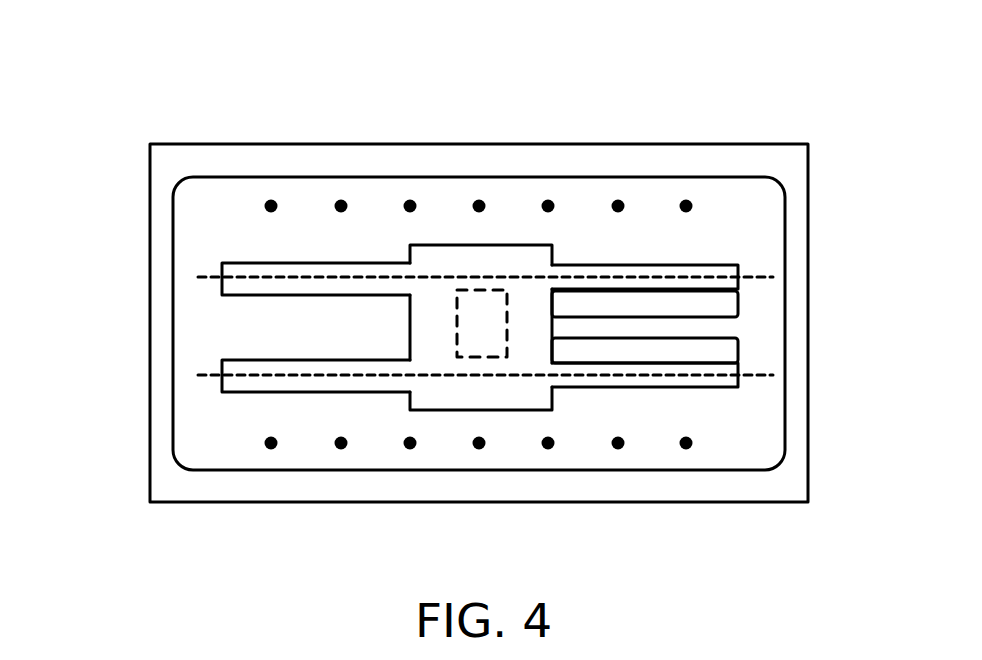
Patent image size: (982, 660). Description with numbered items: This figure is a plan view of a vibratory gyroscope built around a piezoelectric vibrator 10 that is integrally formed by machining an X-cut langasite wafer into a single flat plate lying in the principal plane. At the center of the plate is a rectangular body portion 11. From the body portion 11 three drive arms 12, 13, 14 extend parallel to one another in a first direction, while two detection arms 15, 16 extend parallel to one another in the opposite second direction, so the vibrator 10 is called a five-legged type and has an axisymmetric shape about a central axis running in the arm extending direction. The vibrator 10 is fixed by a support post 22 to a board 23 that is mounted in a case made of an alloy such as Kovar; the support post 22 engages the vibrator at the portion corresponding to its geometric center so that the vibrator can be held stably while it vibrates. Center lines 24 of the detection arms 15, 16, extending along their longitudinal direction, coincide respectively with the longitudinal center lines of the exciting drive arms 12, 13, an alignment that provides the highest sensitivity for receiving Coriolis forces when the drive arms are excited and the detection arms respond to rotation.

The piezoelectric vibrator 10 is at (568, 262).
The body portion 11 is at (457, 245).
The drive arm 12 is at (727, 267).
The drive arm 13 is at (738, 363).
The drive arm 14 is at (727, 327).
The detection arm 15 is at (232, 262).
The detection arm 16 is at (228, 358).
The support post 22 is at (493, 308).
The board 23 is at (285, 177).
The center lines 24 is at (675, 277).